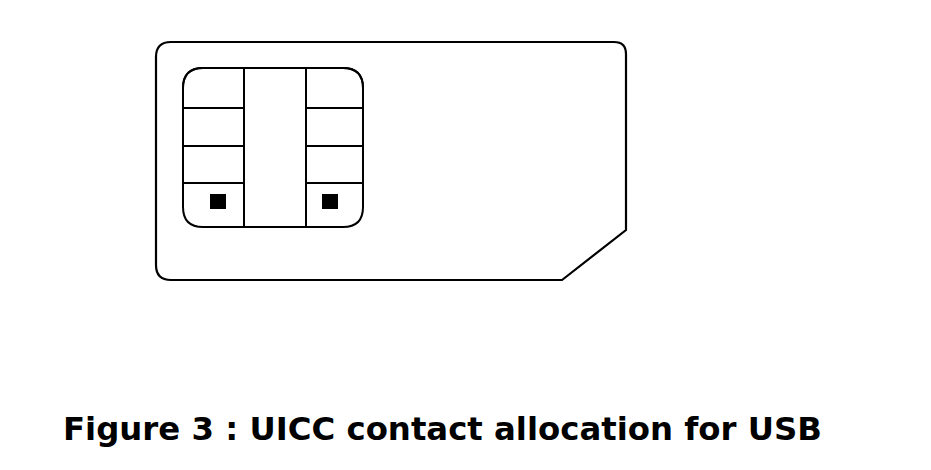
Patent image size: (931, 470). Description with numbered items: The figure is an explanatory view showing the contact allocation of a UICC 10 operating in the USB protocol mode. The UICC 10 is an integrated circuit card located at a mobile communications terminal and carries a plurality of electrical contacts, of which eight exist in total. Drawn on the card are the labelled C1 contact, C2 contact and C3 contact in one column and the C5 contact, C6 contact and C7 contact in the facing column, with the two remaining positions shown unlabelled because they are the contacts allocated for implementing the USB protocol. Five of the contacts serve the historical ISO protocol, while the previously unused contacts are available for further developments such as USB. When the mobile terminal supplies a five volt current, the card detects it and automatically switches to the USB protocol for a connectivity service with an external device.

The UICC 10 is at (641, 110).
The C1 contact C1 is at (213, 88).
The C2 contact C2 is at (213, 127).
The C3 contact C3 is at (213, 164).
The C5 contact C5 is at (334, 88).
The C6 contact C6 is at (334, 127).
The C7 contact C7 is at (334, 164).